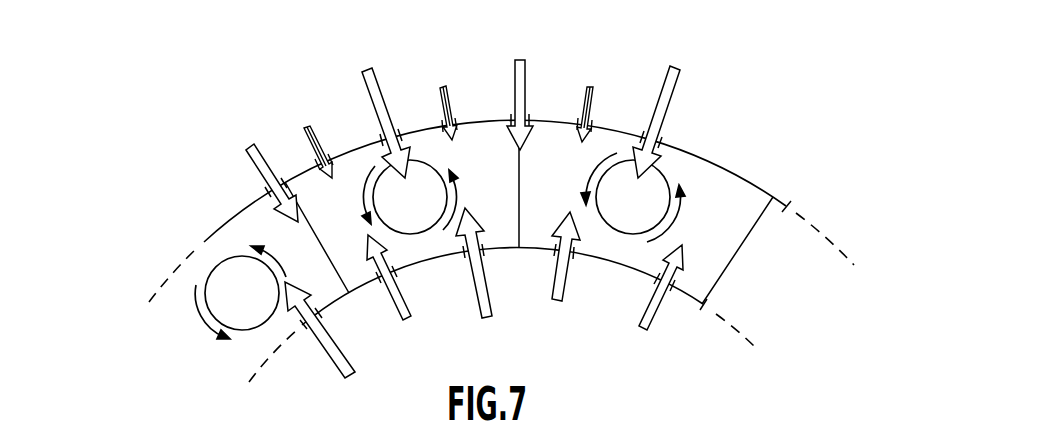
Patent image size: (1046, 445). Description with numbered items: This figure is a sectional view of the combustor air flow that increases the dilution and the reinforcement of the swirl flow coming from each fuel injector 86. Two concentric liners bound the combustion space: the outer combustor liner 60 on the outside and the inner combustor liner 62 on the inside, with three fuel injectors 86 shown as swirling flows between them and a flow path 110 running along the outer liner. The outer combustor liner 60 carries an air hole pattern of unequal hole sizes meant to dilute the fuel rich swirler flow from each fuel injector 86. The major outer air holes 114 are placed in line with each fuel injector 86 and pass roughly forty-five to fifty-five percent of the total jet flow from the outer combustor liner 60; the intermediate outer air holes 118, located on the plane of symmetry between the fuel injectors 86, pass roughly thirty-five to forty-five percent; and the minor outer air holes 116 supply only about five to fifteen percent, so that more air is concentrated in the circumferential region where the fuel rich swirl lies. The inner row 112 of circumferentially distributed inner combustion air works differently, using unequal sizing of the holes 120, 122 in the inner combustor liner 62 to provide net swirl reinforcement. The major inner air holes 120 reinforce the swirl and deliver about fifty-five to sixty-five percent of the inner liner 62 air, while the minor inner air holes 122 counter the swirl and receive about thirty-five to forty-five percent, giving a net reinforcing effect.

The outer combustor liner 60 is at (779, 198).
The inner combustor liner 62 is at (705, 307).
The fuel injector 86 is at (256, 303).
The outer flow path 110 is at (150, 298).
The inner row 112 is at (249, 380).
The major outer air holes 114 is at (660, 138).
The minor outer air holes 116 is at (592, 122).
The intermediate outer air holes 118 is at (530, 118).
The major inner air holes 120 is at (489, 256).
The minor inner air holes 122 is at (578, 255).